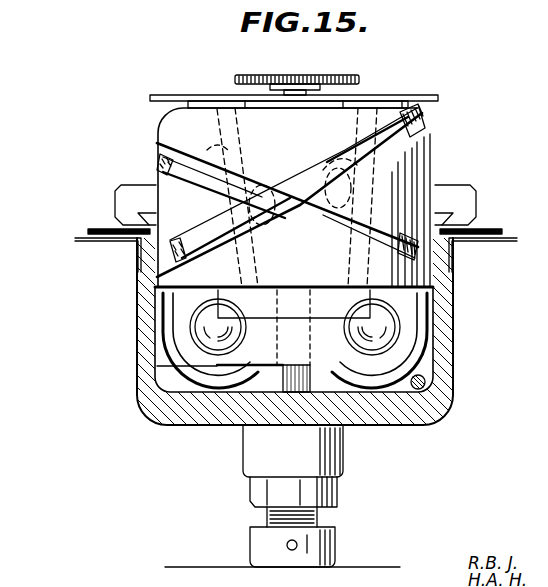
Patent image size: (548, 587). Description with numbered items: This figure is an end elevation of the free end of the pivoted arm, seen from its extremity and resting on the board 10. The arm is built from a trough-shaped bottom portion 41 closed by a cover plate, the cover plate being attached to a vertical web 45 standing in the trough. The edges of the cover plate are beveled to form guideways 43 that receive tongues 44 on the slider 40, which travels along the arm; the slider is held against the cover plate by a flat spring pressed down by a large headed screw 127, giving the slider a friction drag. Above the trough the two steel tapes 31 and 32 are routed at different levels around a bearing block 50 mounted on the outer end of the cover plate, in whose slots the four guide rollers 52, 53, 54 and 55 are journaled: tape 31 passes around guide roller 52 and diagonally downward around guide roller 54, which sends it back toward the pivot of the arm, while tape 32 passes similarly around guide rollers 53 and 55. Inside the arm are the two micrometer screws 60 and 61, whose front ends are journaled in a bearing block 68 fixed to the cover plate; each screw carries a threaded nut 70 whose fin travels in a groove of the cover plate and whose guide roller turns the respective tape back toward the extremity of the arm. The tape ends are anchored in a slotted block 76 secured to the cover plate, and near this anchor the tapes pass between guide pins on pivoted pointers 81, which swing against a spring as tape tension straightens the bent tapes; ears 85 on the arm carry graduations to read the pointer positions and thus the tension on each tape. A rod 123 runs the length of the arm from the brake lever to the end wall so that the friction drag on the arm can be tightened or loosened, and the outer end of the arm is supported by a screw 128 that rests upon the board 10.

The board 10 is at (197, 565).
The steel tape 31 is at (294, 216).
The steel tape 32 is at (320, 190).
The slider 40 is at (378, 100).
The trough-shaped bottom portion 41 is at (175, 405).
The guideways 43 is at (150, 200).
The tongues 44 is at (128, 214).
The vertical web 45 is at (290, 376).
The bearing block 50 is at (420, 157).
The guide roller 52 is at (247, 184).
The guide roller 53 is at (346, 156).
The guide roller 54 is at (323, 243).
The guide roller 55 is at (266, 223).
The micrometer screw 60 is at (380, 320).
The micrometer screw 61 is at (205, 333).
The bearing block 68 is at (178, 350).
The threaded nut 70 is at (180, 374).
The block 76 is at (293, 287).
The pointers 81 is at (88, 231).
The ears 85 is at (88, 242).
The rod 123 is at (426, 379).
The large headed screw 127 is at (328, 74).
The screw 128 is at (320, 539).